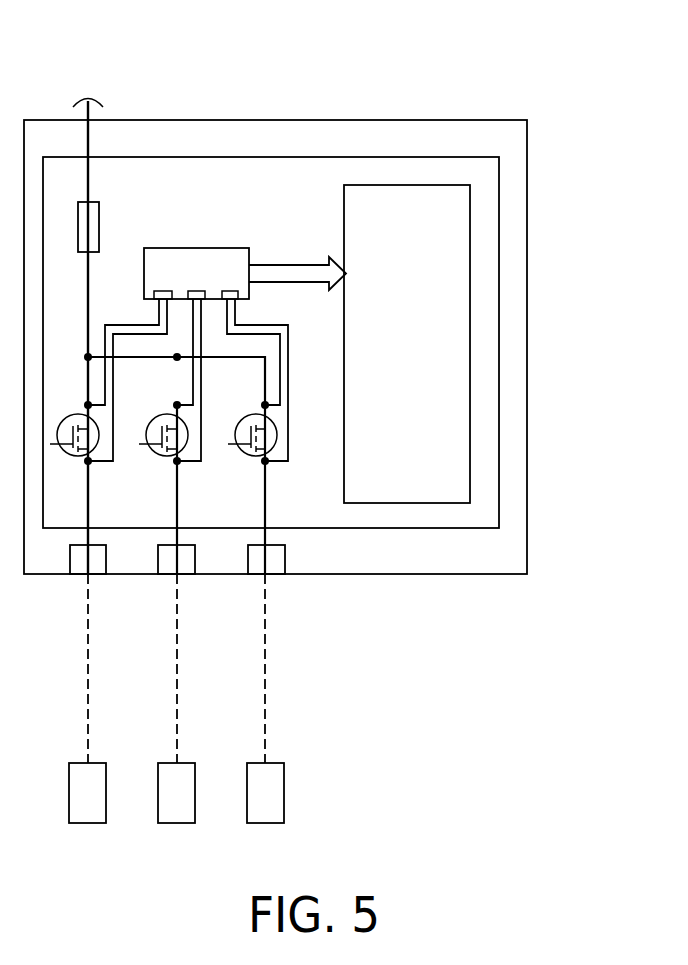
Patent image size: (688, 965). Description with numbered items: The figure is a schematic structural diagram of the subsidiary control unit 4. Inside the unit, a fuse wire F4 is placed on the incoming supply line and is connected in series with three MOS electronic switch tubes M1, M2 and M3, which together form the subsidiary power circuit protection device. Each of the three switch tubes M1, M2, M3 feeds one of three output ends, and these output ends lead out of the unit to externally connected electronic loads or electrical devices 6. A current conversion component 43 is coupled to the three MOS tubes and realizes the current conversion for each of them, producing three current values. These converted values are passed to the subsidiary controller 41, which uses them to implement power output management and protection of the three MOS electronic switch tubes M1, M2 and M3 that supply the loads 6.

The subsidiary control unit 4 is at (406, 118).
The subsidiary controller 41 is at (425, 402).
The current conversion component 43 is at (232, 255).
The electronic loads or electrical devices 6 is at (263, 795).
The fuse wire F4 is at (111, 337).
The MOS electronic switch tube M1 is at (73, 466).
The MOS electronic switch tube M2 is at (154, 466).
The MOS electronic switch tube M3 is at (244, 466).